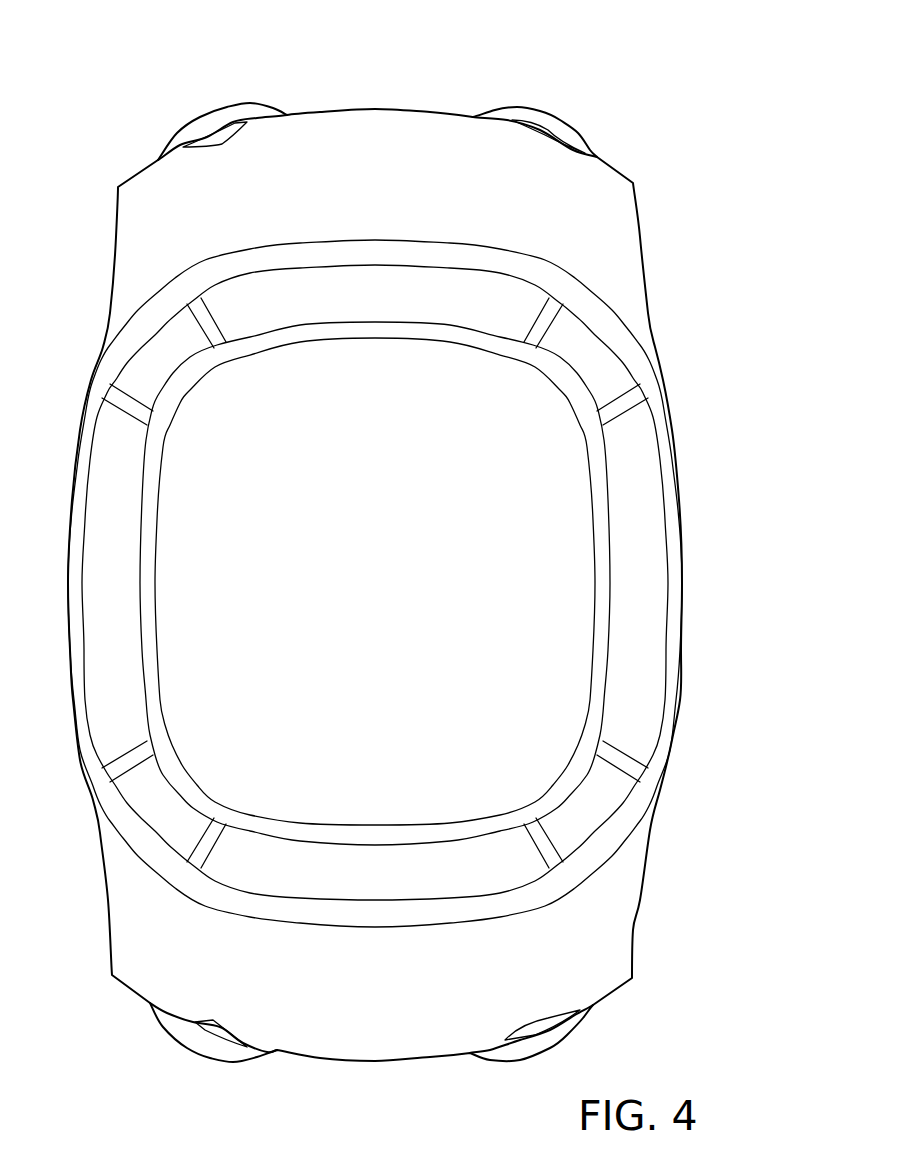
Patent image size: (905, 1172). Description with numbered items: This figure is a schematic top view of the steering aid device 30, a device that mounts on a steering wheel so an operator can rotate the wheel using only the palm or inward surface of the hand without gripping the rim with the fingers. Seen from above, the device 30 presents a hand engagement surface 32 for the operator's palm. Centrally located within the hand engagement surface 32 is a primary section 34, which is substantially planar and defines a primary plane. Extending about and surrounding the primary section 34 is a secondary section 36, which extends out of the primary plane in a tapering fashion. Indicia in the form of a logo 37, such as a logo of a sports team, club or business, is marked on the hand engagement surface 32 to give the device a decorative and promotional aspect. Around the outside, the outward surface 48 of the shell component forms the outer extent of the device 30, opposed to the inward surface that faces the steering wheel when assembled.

The steering aid device 30 is at (647, 93).
The hand engagement surface 32 is at (570, 550).
The primary section 34 is at (573, 636).
The secondary section 36 is at (633, 712).
The logo 37 is at (297, 577).
The outward surface 48 is at (605, 278).